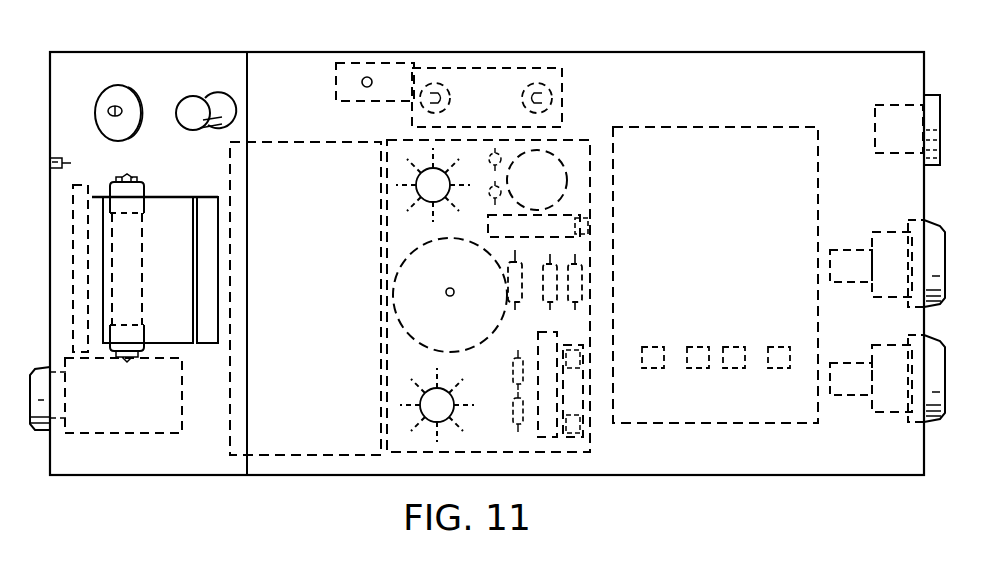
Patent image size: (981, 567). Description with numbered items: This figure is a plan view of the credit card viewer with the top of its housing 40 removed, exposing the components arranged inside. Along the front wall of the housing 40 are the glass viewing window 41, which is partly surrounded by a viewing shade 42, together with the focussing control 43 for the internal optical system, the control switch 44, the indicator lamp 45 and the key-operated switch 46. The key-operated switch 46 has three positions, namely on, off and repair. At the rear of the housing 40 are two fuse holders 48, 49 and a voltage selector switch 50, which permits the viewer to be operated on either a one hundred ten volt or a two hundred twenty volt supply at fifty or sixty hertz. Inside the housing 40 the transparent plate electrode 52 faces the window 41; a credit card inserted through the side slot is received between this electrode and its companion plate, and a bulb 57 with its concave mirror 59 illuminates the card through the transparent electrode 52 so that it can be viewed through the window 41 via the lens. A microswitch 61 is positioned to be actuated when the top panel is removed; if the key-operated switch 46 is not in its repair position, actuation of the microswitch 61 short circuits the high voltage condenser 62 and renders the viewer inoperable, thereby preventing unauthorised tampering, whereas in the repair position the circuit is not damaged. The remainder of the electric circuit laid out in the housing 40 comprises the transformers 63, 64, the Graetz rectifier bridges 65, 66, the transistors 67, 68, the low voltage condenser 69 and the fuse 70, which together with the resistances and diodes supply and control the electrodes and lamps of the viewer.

The housing 40 is at (727, 52).
The glass viewing window 41 is at (188, 316).
The viewing shade 42 is at (208, 208).
The focussing control 43 is at (204, 102).
The control switch 44 is at (118, 86).
The indicator lamp 45 is at (46, 160).
The key-operated switch 46 is at (146, 402).
The fuse holder 48 is at (938, 389).
The fuse holder 49 is at (940, 290).
The voltage selector switch 50 is at (931, 130).
The plate electrode 52 is at (348, 328).
The bulb 57 is at (136, 248).
The concave mirror 59 is at (76, 322).
The microswitch 61 is at (383, 62).
The high voltage condenser 62 is at (480, 86).
The transformer 63 is at (736, 273).
The transformer 64 is at (468, 332).
The Graetz rectifier bridge 65 is at (588, 226).
The Graetz rectifier bridge 66 is at (548, 356).
The transistor 67 is at (443, 411).
The transistor 68 is at (440, 192).
The low voltage condenser 69 is at (556, 181).
The fuse 70 is at (583, 388).